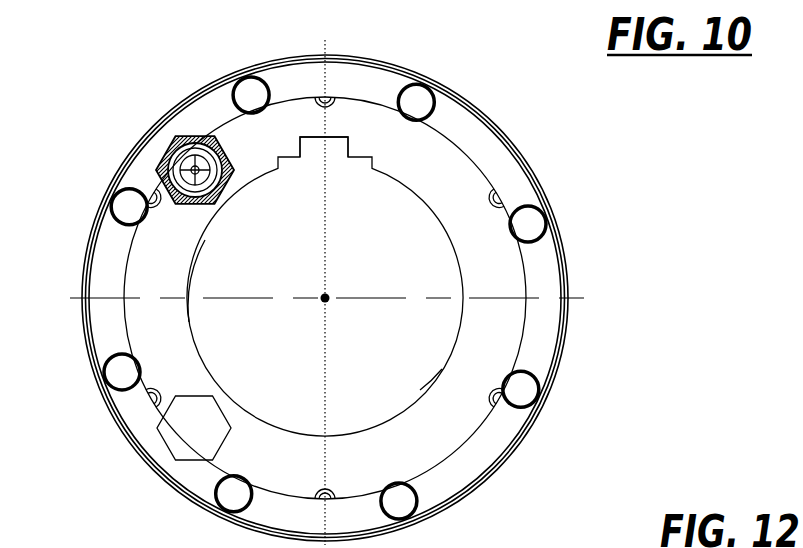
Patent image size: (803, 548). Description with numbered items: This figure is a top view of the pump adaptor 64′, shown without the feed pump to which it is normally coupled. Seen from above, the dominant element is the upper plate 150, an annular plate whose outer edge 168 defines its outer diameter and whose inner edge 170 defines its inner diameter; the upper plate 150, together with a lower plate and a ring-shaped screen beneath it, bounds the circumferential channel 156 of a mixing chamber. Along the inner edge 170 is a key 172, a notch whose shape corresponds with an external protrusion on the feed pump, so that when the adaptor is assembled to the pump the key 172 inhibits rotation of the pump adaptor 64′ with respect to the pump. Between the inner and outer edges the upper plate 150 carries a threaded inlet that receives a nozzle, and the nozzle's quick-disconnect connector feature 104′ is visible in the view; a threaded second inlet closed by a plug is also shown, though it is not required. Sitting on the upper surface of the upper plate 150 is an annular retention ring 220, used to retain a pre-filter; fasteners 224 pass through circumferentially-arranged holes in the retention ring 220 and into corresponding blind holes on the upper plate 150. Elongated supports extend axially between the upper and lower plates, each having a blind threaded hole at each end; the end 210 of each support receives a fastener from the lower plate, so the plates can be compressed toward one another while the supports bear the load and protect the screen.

The pump adaptor 64′ is at (634, 179).
The quick-disconnect connector feature 104′ is at (172, 145).
The upper plate 150 is at (198, 321).
The circumferential channel 156 is at (434, 366).
The outer edge 168 is at (93, 237).
The inner edge 170 is at (432, 212).
The key 172 is at (372, 158).
The end of support 210 is at (320, 483).
The annular retention ring 220 is at (485, 107).
The fasteners 224 is at (250, 92).